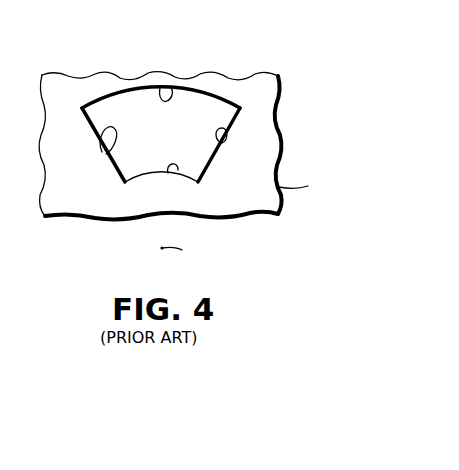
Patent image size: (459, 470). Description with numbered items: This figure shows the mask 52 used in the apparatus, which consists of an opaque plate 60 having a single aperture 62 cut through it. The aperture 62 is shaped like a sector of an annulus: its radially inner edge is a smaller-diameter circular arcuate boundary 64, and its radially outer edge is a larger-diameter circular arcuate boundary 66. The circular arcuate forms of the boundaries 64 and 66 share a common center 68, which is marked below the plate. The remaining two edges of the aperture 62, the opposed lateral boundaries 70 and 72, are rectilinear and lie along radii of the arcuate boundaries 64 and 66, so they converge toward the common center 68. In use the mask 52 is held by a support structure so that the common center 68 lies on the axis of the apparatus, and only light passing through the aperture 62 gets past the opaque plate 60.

The mask 52 is at (284, 116).
The opaque plate 60 is at (308, 186).
The aperture 62 is at (176, 146).
The radially inner circular arcuate boundary 64 is at (178, 171).
The radially outer circular arcuate boundary 66 is at (168, 88).
The common center 68 is at (182, 250).
The opposed lateral boundary 70 is at (106, 153).
The opposed lateral boundary 72 is at (222, 143).